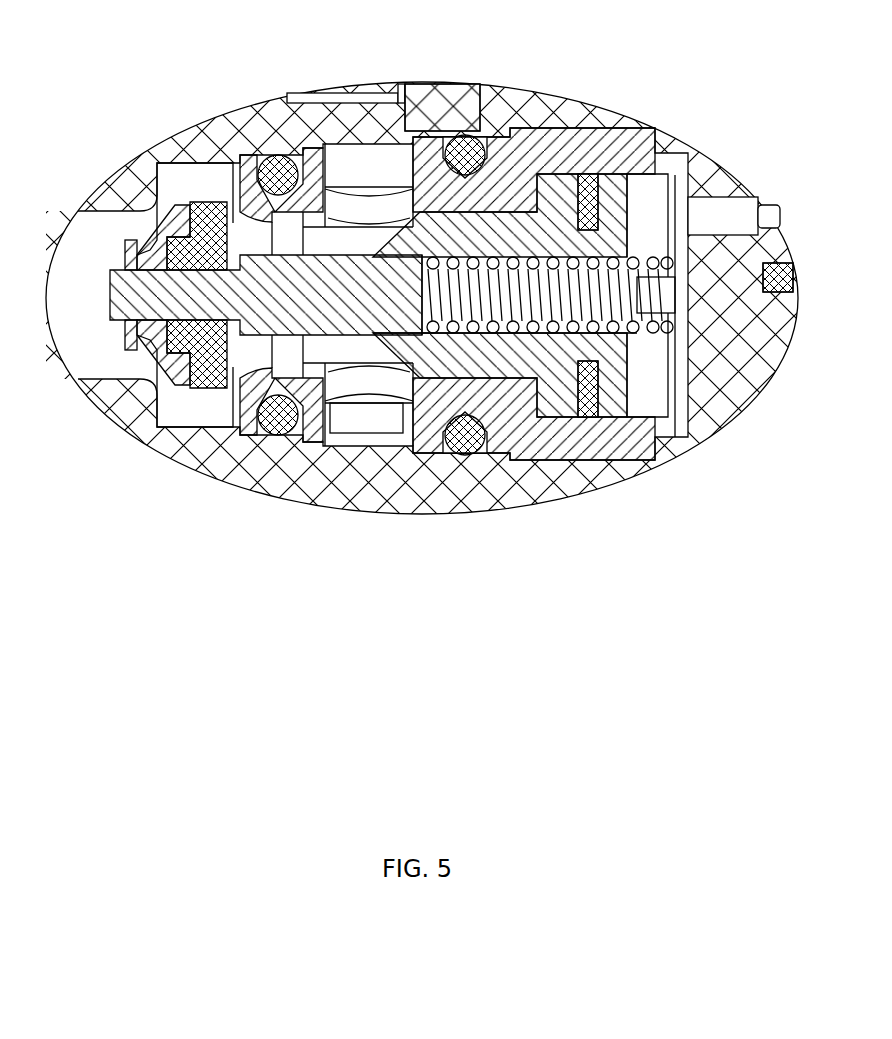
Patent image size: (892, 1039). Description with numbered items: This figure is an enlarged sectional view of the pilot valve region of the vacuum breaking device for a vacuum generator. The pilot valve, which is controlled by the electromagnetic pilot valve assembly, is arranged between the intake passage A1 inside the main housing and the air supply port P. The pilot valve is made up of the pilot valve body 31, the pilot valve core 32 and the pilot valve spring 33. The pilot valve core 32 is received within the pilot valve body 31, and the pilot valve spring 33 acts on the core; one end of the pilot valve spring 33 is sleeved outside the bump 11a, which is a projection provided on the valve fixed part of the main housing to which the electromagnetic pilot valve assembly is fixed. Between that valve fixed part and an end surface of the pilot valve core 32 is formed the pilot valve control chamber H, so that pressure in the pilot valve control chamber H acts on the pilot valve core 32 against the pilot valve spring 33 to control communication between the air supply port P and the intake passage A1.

The intake passage A1 is at (110, 247).
The pilot valve body 31 is at (506, 192).
The pilot valve control chamber H is at (648, 200).
The pilot valve core 32 is at (338, 308).
The air supply port P is at (372, 427).
The pilot valve spring 33 is at (520, 327).
The bump 11a is at (660, 303).